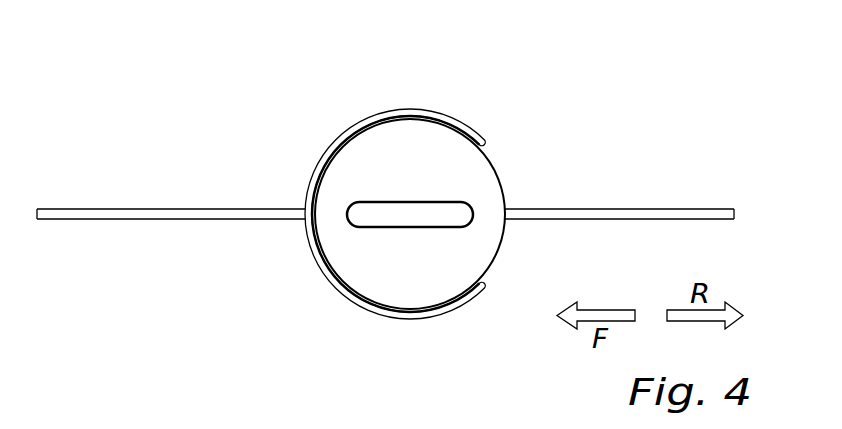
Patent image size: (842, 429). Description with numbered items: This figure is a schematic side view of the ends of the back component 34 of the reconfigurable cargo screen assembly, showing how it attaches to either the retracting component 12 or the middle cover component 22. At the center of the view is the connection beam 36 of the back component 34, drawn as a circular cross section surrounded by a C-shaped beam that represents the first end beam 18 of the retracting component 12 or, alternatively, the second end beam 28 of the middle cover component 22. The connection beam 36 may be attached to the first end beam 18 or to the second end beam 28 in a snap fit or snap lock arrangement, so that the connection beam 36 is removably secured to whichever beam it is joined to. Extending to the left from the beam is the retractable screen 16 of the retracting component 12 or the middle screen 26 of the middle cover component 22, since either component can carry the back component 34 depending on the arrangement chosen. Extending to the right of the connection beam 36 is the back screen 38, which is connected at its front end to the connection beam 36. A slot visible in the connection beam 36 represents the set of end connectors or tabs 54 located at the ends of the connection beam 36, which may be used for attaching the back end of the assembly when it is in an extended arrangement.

The retracting component 12 is at (179, 172).
The middle cover component 22 is at (385, 198).
The retractable screen 16 is at (193, 220).
The middle screen 26 is at (171, 259).
The first end beam 18 is at (397, 109).
The second end beam 28 is at (395, 173).
The back component 34 is at (594, 198).
The connection beam 36 is at (478, 252).
The back screen 38 is at (680, 209).
The end connectors or tabs 54 is at (447, 203).